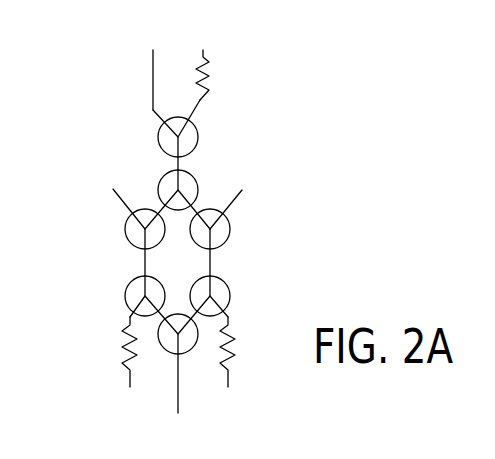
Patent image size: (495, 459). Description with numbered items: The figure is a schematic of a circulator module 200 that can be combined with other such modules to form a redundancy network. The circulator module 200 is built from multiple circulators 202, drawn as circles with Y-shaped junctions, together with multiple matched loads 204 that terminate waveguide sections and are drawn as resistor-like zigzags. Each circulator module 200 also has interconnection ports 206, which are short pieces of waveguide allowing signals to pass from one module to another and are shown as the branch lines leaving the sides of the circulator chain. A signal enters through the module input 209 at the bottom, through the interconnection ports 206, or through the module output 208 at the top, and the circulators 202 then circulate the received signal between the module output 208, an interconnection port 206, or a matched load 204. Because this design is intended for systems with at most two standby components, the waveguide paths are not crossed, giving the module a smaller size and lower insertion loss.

The circulator module 200 is at (350, 121).
The circulator 202 is at (163, 181).
The matched load 204 is at (207, 73).
The interconnection port 206 is at (118, 197).
The module output 208 is at (150, 92).
The module input 209 is at (173, 377).